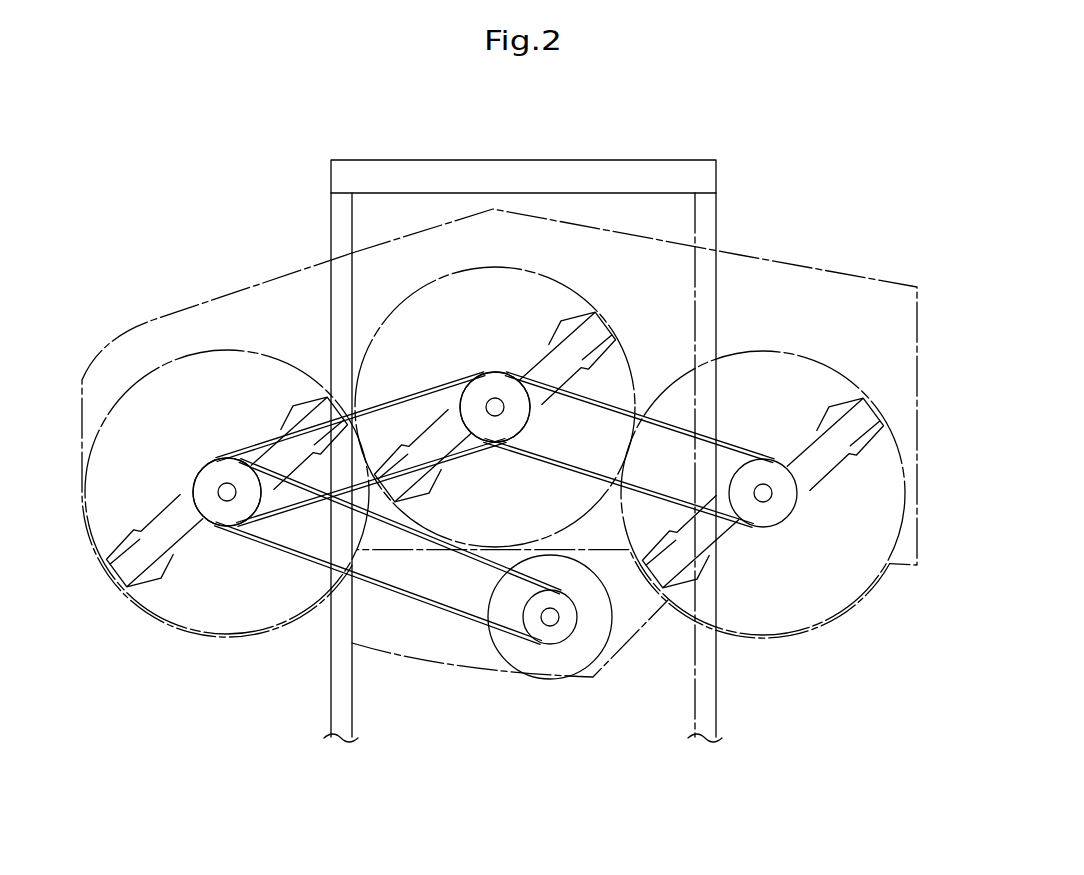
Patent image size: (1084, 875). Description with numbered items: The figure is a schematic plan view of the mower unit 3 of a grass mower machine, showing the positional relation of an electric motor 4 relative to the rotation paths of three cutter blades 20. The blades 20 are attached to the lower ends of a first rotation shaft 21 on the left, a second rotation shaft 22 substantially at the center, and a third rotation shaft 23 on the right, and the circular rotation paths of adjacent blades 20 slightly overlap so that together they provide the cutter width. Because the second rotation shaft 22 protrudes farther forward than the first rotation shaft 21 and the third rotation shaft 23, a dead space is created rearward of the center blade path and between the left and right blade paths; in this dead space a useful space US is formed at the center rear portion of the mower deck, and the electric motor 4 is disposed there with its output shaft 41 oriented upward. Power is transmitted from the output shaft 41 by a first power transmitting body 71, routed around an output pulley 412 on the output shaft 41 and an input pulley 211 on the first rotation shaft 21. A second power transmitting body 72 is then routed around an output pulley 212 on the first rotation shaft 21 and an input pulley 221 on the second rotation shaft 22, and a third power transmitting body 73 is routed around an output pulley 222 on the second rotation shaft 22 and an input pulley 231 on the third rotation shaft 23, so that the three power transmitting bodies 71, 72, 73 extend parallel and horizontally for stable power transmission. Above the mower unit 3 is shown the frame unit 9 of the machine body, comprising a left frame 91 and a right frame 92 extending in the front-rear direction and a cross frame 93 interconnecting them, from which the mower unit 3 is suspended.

The mower unit 3 is at (188, 243).
The electric motor 4 is at (572, 659).
The frame unit 9 is at (528, 406).
The cutter blade 20 is at (173, 540).
The first rotation shaft 21 is at (216, 482).
The second rotation shaft 22 is at (492, 398).
The third rotation shaft 23 is at (772, 501).
The output shaft 41 is at (557, 621).
The first power transmitting body 71 is at (467, 617).
The second power transmitting body 72 is at (415, 396).
The third power transmitting body 73 is at (638, 413).
The left frame 91 is at (352, 330).
The right frame 92 is at (715, 306).
The cross frame 93 is at (560, 160).
The input pulley 211 is at (223, 521).
The output pulley 212 is at (227, 492).
The input pulley 221 is at (481, 433).
The output pulley 222 is at (495, 407).
The input pulley 231 is at (752, 466).
The output pulley 412 is at (560, 636).
The useful space US is at (407, 652).